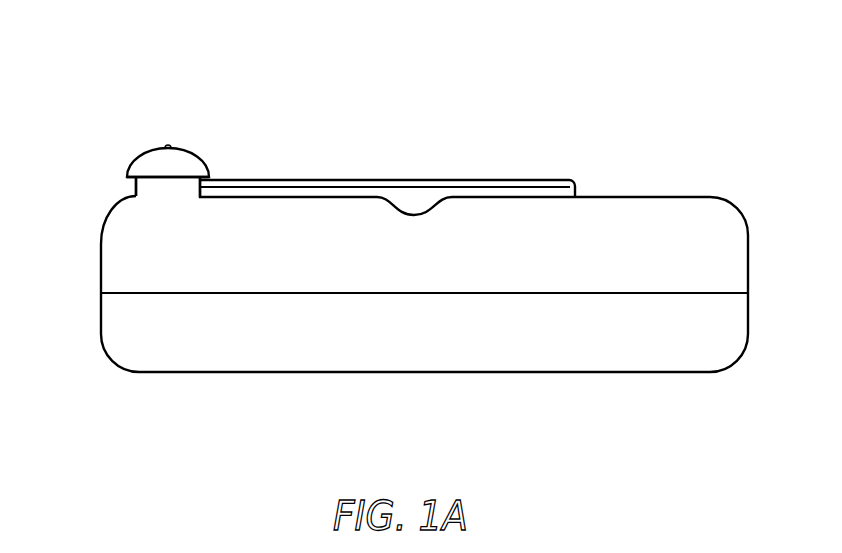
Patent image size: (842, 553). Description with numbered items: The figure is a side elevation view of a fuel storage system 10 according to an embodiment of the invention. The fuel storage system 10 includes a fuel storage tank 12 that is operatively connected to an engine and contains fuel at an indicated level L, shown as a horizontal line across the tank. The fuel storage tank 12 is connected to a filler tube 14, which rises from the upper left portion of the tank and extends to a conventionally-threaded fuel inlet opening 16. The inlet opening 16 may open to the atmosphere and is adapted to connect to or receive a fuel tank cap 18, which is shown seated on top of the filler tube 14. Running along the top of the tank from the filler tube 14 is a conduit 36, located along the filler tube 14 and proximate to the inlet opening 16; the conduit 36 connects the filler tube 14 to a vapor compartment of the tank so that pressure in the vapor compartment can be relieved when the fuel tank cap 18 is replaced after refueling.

The fuel storage system 10 is at (535, 108).
The fuel storage tank 12 is at (177, 372).
The filler tube 14 is at (132, 186).
The fuel inlet opening 16 is at (173, 178).
The fuel tank cap 18 is at (123, 137).
The conduit 36 is at (212, 178).
The fuel level L is at (125, 292).